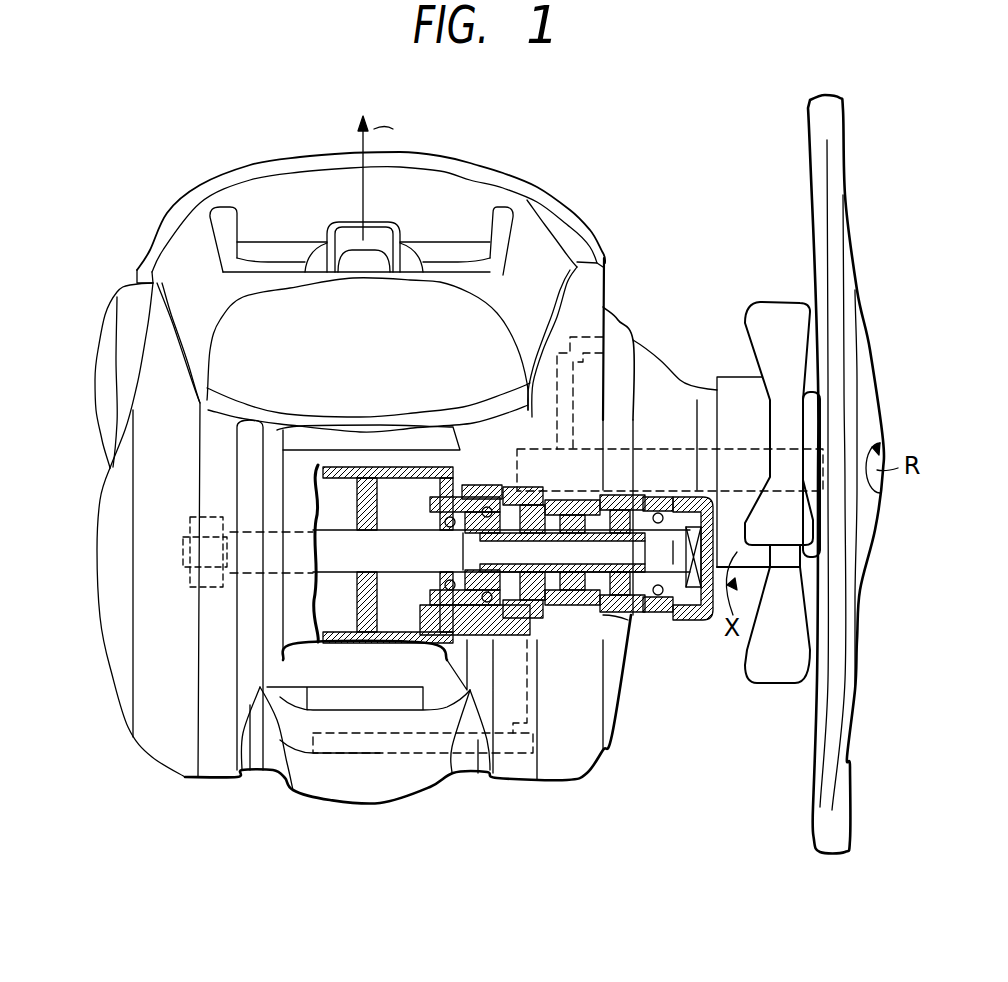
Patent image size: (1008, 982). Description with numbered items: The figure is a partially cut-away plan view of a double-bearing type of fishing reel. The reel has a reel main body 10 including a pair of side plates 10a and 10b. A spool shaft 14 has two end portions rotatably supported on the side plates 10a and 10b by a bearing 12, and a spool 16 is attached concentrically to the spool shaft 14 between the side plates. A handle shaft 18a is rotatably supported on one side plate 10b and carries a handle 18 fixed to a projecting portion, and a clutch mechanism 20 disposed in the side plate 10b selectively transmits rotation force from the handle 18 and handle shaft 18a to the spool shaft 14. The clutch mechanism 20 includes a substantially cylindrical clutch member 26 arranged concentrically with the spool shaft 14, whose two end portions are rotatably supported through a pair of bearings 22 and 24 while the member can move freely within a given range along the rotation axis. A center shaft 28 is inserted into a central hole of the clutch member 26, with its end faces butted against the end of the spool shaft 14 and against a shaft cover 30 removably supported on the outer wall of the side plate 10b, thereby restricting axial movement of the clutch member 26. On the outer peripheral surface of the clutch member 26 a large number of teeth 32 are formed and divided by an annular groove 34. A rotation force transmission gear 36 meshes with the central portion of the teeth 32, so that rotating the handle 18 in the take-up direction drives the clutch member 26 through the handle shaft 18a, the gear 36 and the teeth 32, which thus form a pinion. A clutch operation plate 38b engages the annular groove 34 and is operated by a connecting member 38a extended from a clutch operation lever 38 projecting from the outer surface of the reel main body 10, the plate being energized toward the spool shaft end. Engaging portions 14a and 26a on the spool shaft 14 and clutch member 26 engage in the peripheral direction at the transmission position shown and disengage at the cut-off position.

The reel main body 10 is at (533, 175).
The side plate 10a is at (135, 570).
The side plate 10b is at (598, 292).
The bearing 12 is at (190, 523).
The spool shaft 14 is at (326, 530).
The engaging portion 14a is at (472, 548).
The spool 16 is at (366, 455).
The handle 18 is at (808, 156).
The handle shaft 18a is at (779, 457).
The clutch mechanism 20 is at (548, 484).
The bearing 22 is at (482, 485).
The bearing 24 is at (680, 612).
The clutch member 26 is at (512, 480).
The engaging portion 26a is at (520, 640).
The center shaft 28 is at (665, 500).
The shaft cover 30 is at (700, 620).
The teeth 32 is at (625, 630).
The annular groove 34 is at (545, 520).
The rotation force transmission gear 36 is at (600, 505).
The clutch operation lever 38 is at (308, 795).
The connecting member 38a is at (548, 700).
The clutch operation plate 38b is at (532, 585).